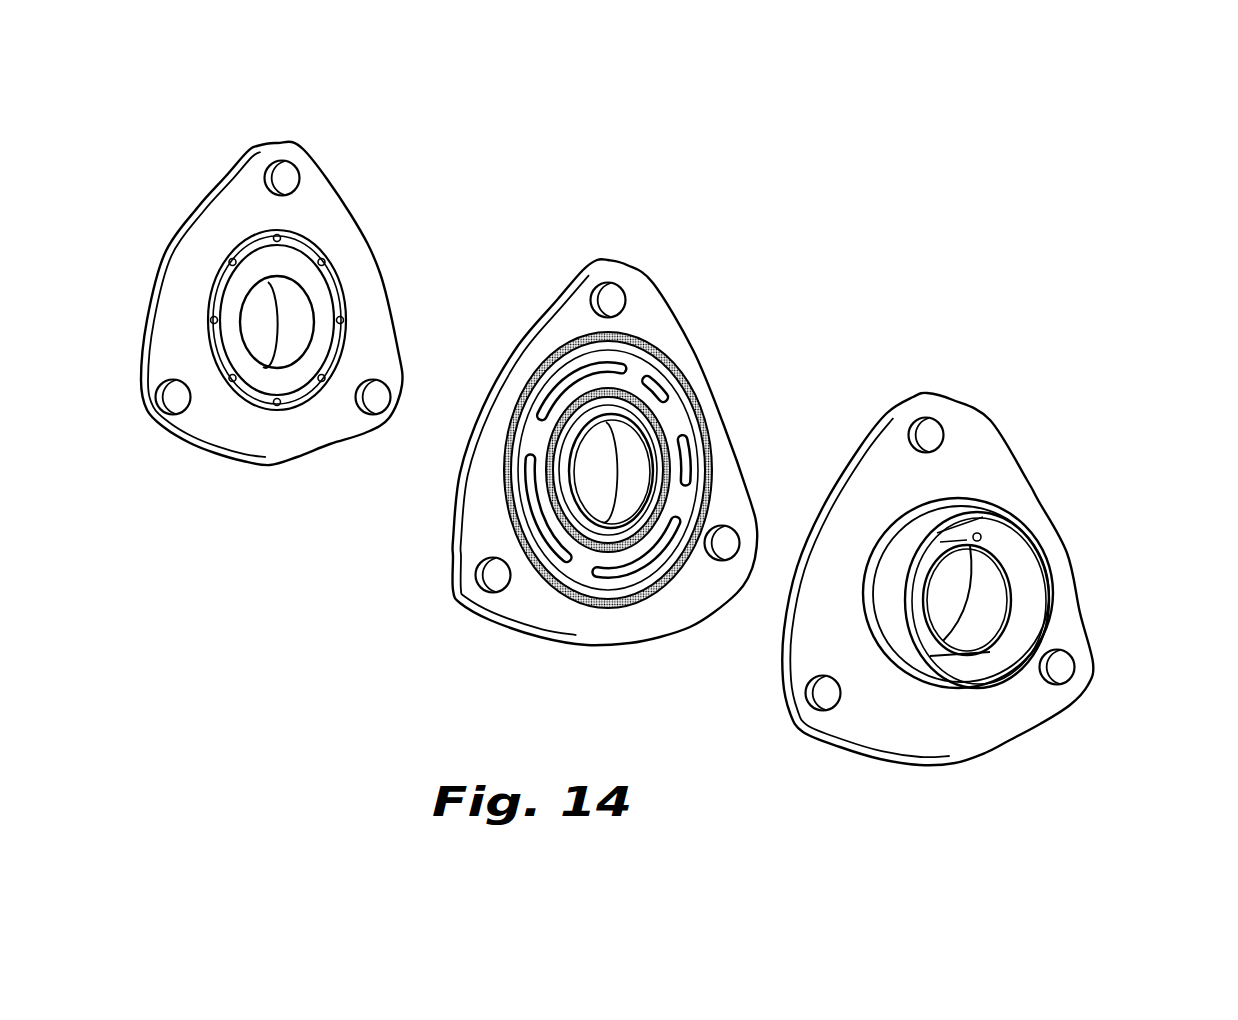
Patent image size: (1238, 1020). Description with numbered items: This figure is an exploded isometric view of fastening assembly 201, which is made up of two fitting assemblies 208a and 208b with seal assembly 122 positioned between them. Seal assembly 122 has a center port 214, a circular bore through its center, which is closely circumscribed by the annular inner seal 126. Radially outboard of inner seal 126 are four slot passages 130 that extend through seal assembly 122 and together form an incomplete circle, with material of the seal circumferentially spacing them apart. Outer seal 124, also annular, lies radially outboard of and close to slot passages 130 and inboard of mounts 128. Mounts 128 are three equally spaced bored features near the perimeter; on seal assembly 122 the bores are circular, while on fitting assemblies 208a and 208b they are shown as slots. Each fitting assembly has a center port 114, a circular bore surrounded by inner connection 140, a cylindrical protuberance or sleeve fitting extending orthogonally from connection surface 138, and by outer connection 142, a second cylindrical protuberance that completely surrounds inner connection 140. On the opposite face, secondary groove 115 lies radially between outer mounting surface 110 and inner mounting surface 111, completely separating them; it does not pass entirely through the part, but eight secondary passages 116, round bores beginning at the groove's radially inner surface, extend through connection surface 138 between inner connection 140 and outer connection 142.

The fastening assembly 201 is at (880, 176).
The fitting assembly 208a is at (366, 155).
The outer mounting surface 110 is at (364, 250).
The inner mounting surface 111 is at (323, 298).
The center port 114 is at (268, 321).
The secondary groove 115 is at (342, 346).
The secondary passages 116 is at (231, 262).
The seal assembly 122 is at (730, 318).
The outer seal 124 is at (712, 434).
The inner seal 126 is at (663, 450).
The mounts 128 is at (267, 160).
The slot passages 130 is at (600, 373).
The center port 214 is at (600, 487).
The fitting assembly 208b is at (1038, 441).
The connection surface 138 is at (1028, 517).
The inner connection 140 is at (1012, 598).
The outer connection 142 is at (1046, 631).